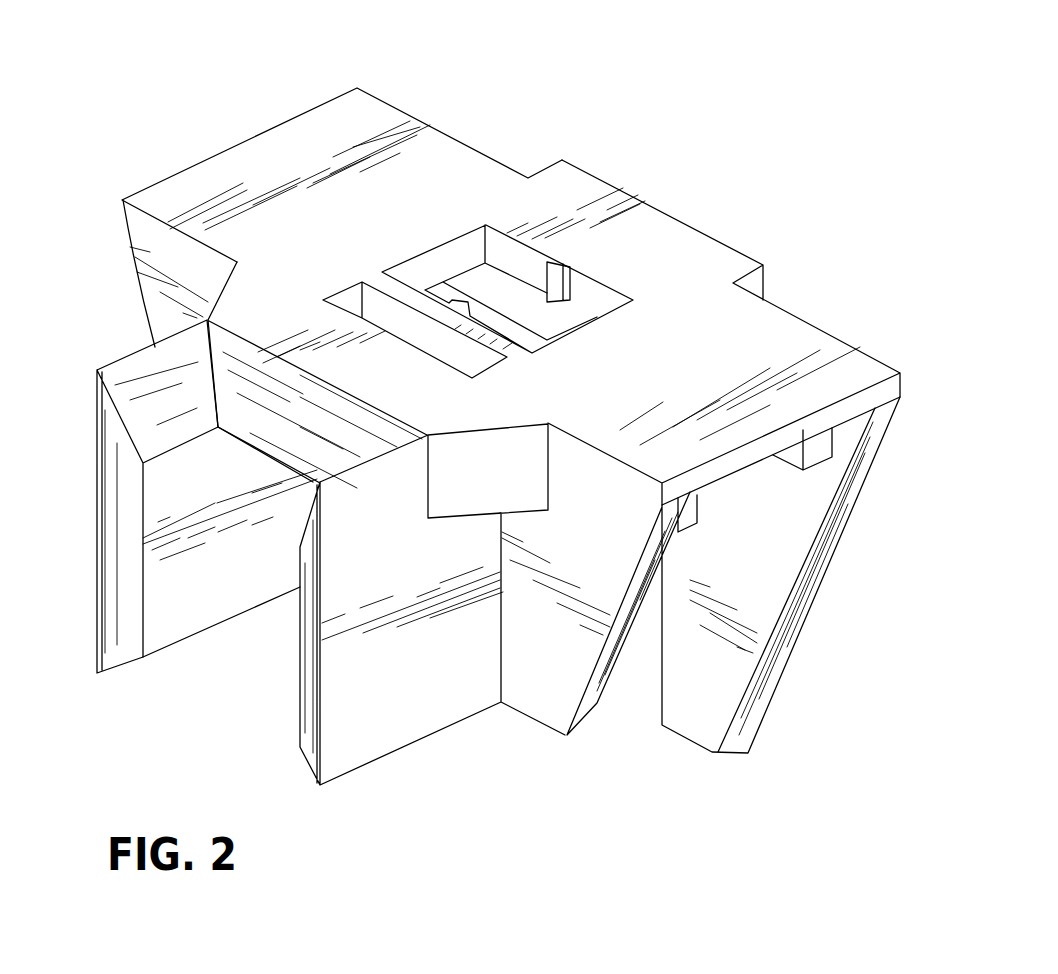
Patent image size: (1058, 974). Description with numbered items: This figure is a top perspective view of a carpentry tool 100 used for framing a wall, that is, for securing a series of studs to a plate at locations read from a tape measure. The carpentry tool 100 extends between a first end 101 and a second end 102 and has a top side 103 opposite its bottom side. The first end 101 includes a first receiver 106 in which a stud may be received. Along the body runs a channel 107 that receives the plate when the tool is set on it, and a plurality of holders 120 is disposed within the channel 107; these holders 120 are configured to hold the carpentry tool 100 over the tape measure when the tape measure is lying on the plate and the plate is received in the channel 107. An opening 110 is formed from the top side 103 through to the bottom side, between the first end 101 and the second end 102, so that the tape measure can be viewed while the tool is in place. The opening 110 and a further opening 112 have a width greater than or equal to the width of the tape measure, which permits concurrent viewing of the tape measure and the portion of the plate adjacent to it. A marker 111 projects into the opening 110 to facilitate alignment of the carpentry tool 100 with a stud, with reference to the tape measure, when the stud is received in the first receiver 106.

The carpentry tool 100 is at (202, 140).
The first end 101 is at (97, 390).
The second end 102 is at (397, 105).
The top side 103 is at (669, 250).
The first receiver 106 is at (238, 645).
The channel 107 is at (650, 634).
The opening 110 is at (483, 275).
The marker 111 is at (555, 262).
The opening 112 is at (353, 313).
The holders 120 is at (822, 447).